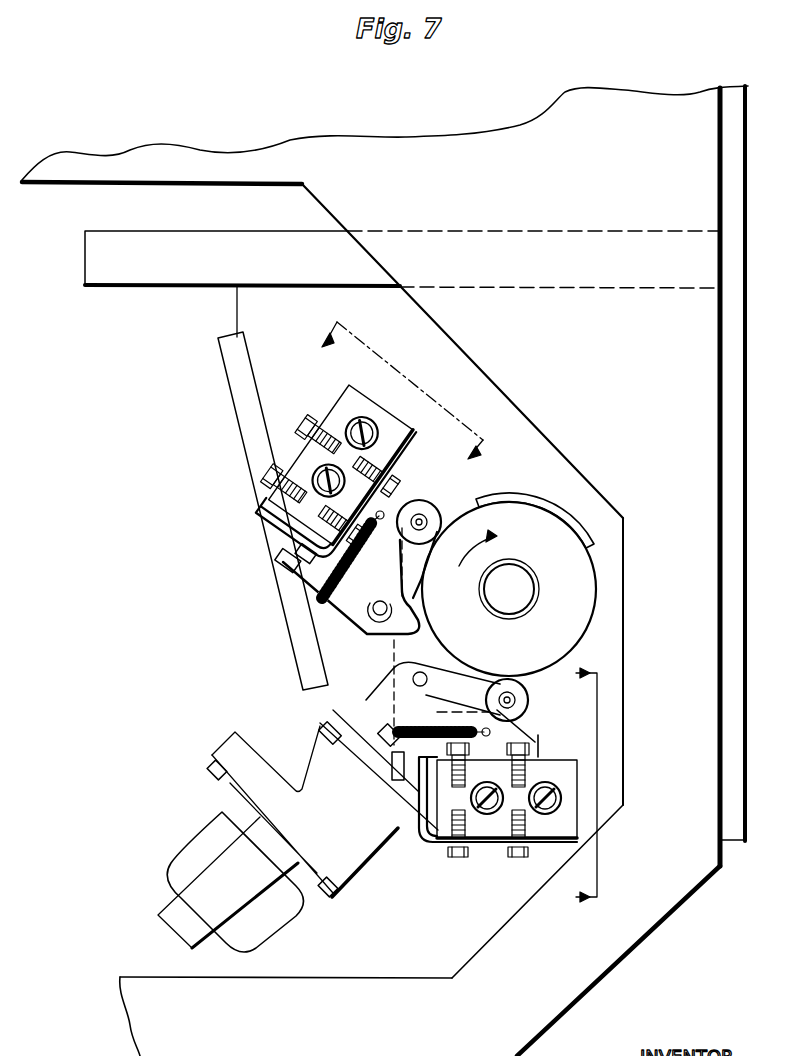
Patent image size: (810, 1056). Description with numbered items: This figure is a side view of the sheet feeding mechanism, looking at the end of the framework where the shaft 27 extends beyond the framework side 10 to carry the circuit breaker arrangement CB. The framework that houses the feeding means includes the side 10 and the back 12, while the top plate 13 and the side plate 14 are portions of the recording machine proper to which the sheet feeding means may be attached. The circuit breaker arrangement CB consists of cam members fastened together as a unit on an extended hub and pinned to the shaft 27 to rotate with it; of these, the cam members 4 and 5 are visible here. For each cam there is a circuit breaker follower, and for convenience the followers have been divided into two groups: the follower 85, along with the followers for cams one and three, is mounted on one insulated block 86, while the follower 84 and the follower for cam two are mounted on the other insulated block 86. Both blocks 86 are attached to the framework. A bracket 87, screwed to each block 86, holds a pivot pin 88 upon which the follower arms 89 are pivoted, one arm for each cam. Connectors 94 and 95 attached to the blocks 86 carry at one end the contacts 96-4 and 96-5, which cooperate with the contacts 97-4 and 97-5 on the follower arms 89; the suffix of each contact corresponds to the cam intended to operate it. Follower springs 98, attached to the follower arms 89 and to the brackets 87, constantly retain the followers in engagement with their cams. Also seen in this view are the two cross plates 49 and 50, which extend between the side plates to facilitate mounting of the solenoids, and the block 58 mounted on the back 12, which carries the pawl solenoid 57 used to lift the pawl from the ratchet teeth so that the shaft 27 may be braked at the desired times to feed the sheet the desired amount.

The cam member 4 is at (582, 540).
The cam member 5 is at (595, 582).
The side 10 is at (238, 314).
The back 12 is at (134, 283).
The top plate 13 is at (745, 838).
The side plate 14 is at (656, 933).
The shaft 27 is at (528, 586).
The cross plate 49 is at (322, 722).
The cross plate 50 is at (302, 661).
The pawl solenoid 57 is at (265, 927).
The block 58 is at (362, 870).
The circuit breaker follower 84 is at (431, 510).
The circuit breaker follower 85 is at (528, 698).
The insulated block 86 is at (352, 396).
The bracket 87 is at (404, 492).
The pivot pin 88 is at (419, 670).
The follower arm 89 is at (352, 608).
The connector 94 is at (305, 446).
The connector 95 is at (487, 850).
The contact 96-4 is at (284, 552).
The contact 97-4 is at (290, 560).
The contact 96-5 is at (403, 790).
The contact 97-5 is at (350, 770).
The follower spring 98 is at (355, 546).
The circuit breaker arrangement CB is at (529, 500).